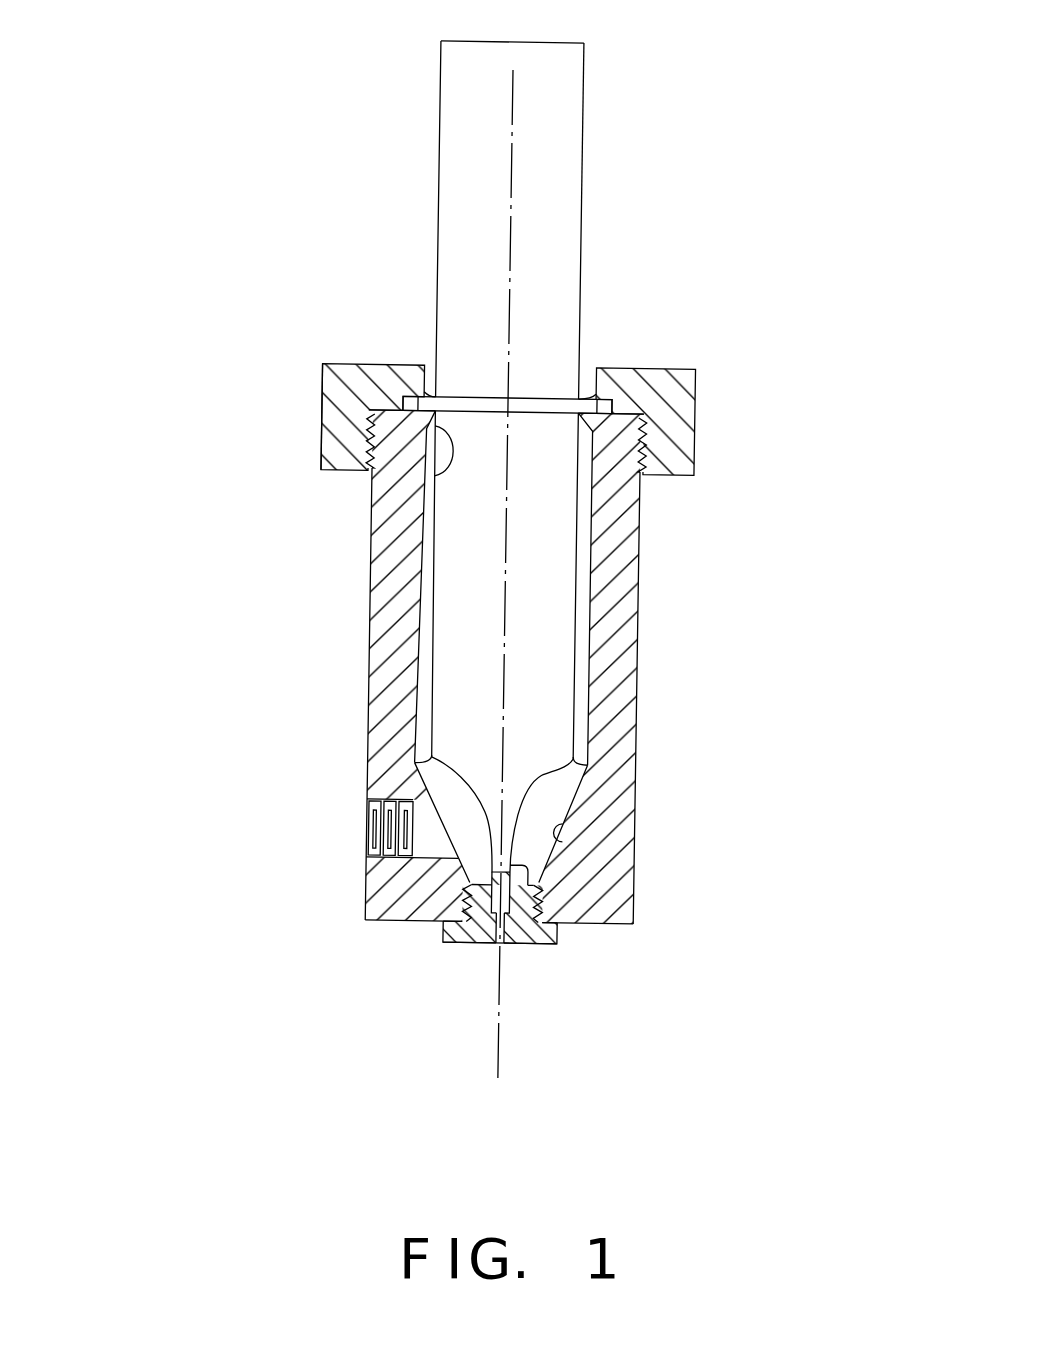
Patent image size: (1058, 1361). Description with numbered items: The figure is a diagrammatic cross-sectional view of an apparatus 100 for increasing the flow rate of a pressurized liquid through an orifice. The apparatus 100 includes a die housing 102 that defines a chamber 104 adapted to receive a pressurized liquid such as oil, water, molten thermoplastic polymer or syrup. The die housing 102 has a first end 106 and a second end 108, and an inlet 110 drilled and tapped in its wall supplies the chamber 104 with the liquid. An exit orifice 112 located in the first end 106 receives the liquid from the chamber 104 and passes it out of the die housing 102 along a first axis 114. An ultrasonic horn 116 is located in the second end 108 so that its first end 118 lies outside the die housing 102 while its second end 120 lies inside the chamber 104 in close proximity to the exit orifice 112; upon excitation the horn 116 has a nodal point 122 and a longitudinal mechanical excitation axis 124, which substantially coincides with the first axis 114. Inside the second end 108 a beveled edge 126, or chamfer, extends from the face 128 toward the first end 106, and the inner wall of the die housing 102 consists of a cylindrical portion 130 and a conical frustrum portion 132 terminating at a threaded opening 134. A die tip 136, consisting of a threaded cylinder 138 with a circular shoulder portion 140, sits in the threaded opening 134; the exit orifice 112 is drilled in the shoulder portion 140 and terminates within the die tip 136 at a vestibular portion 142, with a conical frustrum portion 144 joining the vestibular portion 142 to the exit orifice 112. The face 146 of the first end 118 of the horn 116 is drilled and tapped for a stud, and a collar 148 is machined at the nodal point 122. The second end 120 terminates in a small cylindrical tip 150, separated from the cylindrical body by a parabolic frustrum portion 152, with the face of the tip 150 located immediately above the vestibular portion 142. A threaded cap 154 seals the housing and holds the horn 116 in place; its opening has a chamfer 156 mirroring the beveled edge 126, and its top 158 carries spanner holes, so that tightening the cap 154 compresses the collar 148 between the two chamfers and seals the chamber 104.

The apparatus 100 is at (333, 640).
The die housing 102 is at (640, 722).
The chamber 104 is at (567, 792).
The first end of die housing 106 is at (638, 893).
The second end of die housing 108 is at (650, 462).
The inlet 110 is at (367, 826).
The exit orifice 112 is at (470, 945).
The first axis 114 is at (500, 1013).
The ultrasonic horn 116 is at (558, 243).
The first end of horn 118 is at (583, 72).
The second end of horn 120 is at (527, 943).
The nodal point 122 is at (497, 398).
The longitudinal mechanical excitation axis 124 is at (515, 190).
The beveled edge 126 is at (443, 473).
The face of second end 128 is at (614, 404).
The cylindrical portion 130 is at (590, 578).
The conical frustrum portion 132 is at (556, 845).
The threaded opening 134 is at (550, 932).
The die tip 136 is at (450, 926).
The threaded cylinder 138 is at (462, 900).
The circular shoulder portion 140 is at (560, 942).
The vestibular portion 142 is at (510, 945).
The conical frustrum portion 144 is at (487, 944).
The face of first end of horn 146 is at (490, 42).
The collar 148 is at (541, 398).
The small cylindrical tip 150 is at (466, 884).
The parabolic frustrum portion 152 is at (453, 778).
The threaded cap 154 is at (318, 421).
The chamfer 156 is at (322, 380).
The top of cap 158 is at (697, 373).